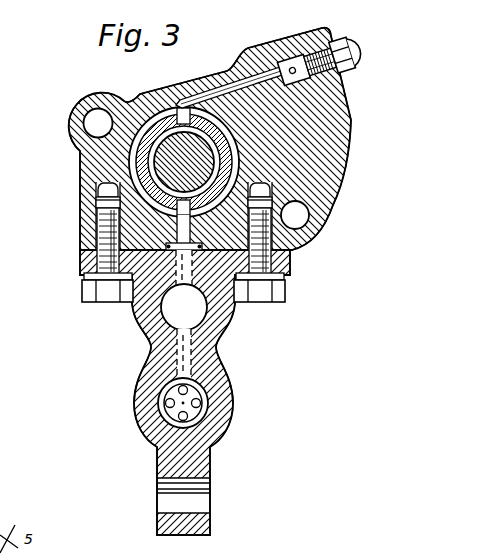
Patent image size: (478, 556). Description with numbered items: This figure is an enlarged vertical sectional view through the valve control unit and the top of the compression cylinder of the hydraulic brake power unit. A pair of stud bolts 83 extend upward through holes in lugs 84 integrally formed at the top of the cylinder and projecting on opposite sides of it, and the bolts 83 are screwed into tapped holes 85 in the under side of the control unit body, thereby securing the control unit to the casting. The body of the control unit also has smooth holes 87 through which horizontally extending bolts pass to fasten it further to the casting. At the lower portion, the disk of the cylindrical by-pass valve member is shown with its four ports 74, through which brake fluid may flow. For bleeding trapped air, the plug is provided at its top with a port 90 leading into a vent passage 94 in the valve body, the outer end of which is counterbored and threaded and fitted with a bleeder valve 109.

The ports 74 is at (205, 403).
The stud bolts 83 is at (96, 302).
The lugs 84 is at (82, 258).
The tapped holes 85 is at (97, 198).
The smooth holes 87 is at (84, 121).
The port 90 is at (182, 108).
The vent passage 94 is at (213, 92).
The bleeder valve 109 is at (357, 77).